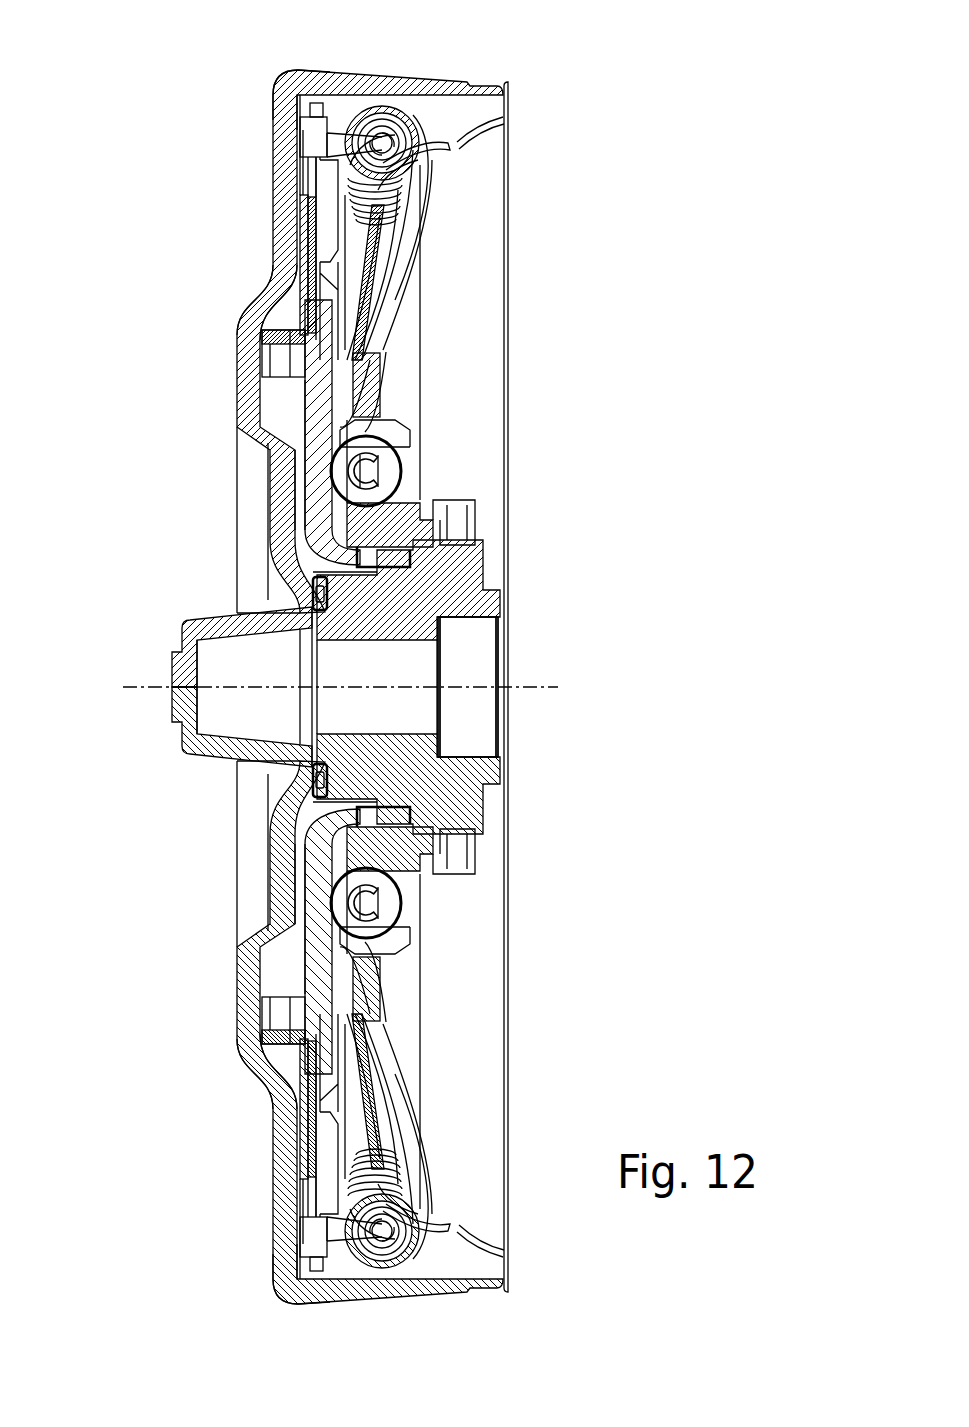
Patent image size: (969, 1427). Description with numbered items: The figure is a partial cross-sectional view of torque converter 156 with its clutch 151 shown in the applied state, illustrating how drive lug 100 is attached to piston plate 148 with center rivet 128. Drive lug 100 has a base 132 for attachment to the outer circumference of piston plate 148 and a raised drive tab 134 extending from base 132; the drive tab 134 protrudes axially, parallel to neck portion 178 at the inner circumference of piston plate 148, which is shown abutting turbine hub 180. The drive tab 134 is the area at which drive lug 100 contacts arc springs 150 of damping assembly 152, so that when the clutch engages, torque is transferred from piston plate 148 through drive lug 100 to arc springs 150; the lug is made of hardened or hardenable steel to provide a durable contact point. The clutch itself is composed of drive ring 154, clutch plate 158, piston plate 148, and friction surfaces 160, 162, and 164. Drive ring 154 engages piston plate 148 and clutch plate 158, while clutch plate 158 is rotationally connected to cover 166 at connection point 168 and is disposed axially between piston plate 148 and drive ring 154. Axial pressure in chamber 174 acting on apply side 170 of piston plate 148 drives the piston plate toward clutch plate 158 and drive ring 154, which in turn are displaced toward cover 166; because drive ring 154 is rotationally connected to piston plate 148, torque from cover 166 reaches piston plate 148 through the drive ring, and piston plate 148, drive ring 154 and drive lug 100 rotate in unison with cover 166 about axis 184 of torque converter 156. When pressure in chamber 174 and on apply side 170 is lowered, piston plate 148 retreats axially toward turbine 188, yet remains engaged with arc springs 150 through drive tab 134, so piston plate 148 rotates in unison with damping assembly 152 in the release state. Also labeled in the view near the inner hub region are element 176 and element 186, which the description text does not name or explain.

The drive lug 100 is at (380, 118).
The center rivet 128 is at (300, 140).
The base 132 is at (318, 76).
The drive tab 134 is at (400, 126).
The piston plate 148 is at (322, 173).
The arc springs 150 is at (357, 113).
The clutch 151 is at (333, 232).
The damping assembly 152 is at (414, 85).
The drive ring 154 is at (300, 150).
The torque converter 156 is at (215, 76).
The clutch plate 158 is at (265, 275).
The friction surface 160 is at (302, 200).
The friction surface 162 is at (310, 222).
The friction surface 164 is at (320, 250).
The cover 166 is at (280, 86).
The connection point 168 is at (262, 340).
The apply side 170 is at (340, 397).
The chamber 174 is at (322, 360).
The retainer 176 is at (330, 578).
The neck portion 178 is at (310, 560).
The turbine hub 180 is at (316, 592).
The axis 184 is at (523, 690).
The snap ring 186 is at (393, 482).
The turbine 188 is at (493, 131).